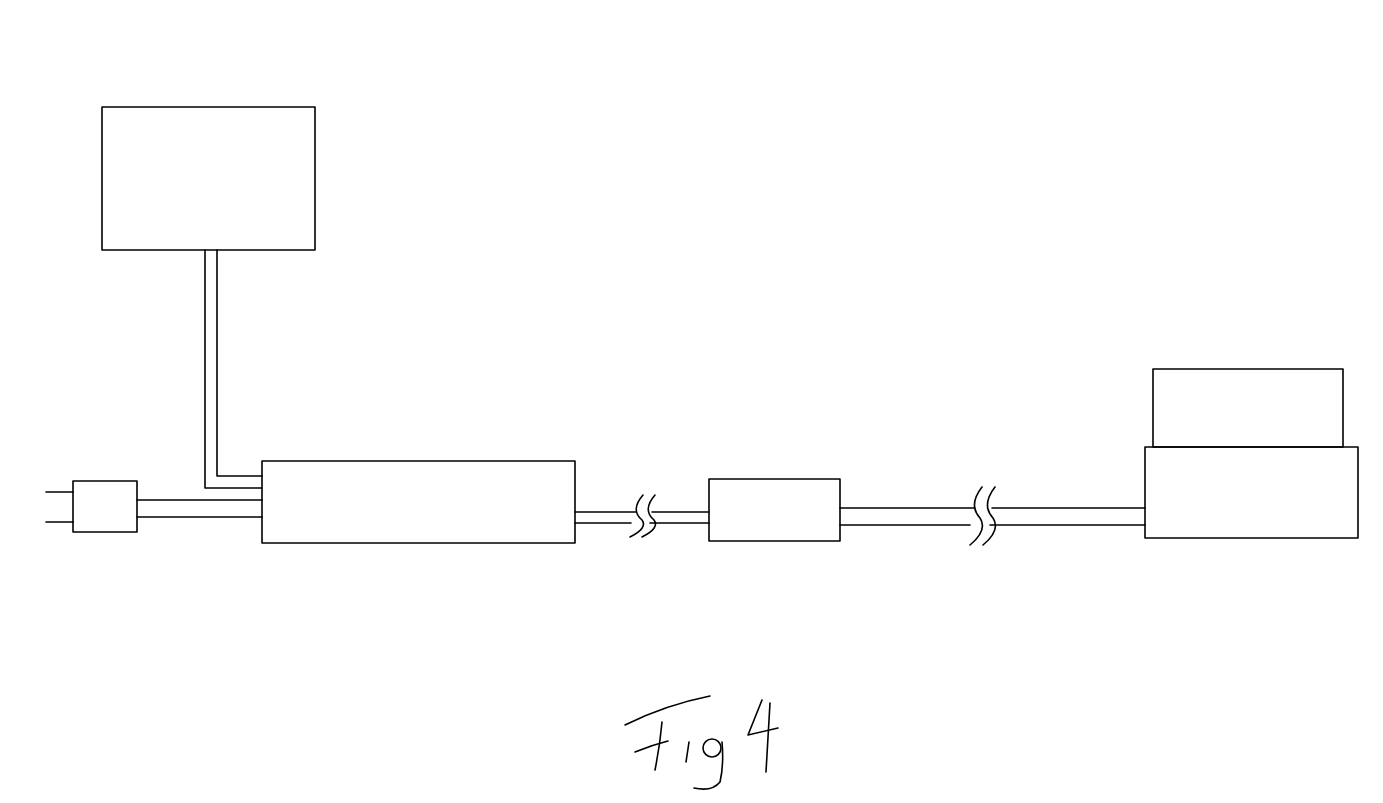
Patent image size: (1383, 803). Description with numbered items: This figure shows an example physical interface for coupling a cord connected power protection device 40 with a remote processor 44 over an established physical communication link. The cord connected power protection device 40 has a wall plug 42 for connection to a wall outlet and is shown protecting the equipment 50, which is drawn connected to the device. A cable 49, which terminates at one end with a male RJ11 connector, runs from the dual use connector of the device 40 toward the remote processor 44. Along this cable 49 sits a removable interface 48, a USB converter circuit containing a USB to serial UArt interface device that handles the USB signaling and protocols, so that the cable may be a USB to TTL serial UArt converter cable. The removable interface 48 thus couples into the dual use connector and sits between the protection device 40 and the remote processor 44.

The cord connected power protection device 40 is at (425, 445).
The wall plug 42 is at (112, 463).
The remote processor 44 is at (1205, 357).
The removable interface 48 is at (767, 466).
The cable 49 is at (670, 497).
The equipment 50 is at (278, 107).